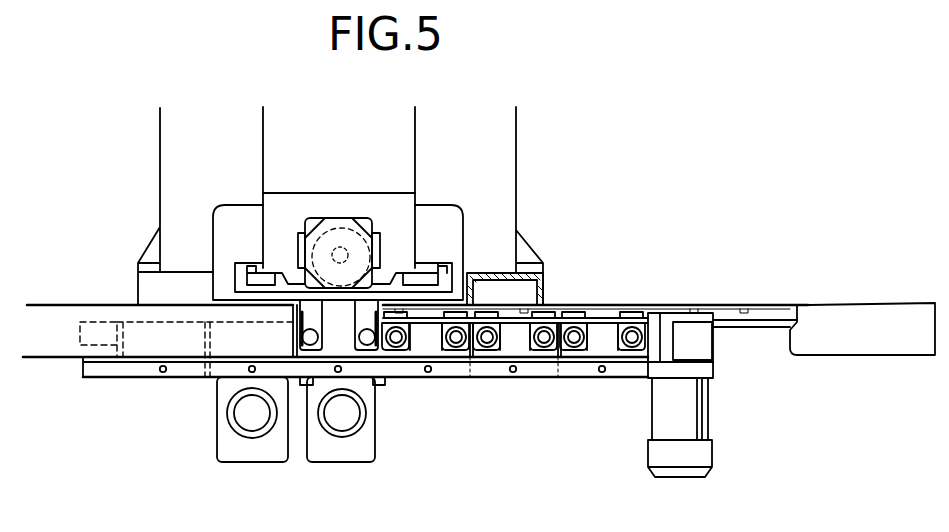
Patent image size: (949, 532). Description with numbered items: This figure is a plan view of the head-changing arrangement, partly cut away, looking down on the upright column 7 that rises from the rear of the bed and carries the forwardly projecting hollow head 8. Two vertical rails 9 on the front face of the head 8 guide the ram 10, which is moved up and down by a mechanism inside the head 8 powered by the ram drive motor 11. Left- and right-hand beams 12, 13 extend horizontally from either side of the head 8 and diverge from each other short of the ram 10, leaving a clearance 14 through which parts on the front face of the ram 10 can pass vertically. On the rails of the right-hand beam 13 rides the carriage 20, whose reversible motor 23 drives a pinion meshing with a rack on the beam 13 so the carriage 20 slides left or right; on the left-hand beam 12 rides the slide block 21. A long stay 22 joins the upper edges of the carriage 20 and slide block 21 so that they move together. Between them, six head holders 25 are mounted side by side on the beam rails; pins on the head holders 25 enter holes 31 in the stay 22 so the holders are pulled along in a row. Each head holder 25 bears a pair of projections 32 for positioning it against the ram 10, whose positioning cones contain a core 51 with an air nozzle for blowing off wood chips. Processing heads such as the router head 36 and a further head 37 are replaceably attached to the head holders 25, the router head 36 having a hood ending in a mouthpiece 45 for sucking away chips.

The upright column 7 is at (160, 162).
The hollow head 8 is at (417, 152).
The vertical rail 9 is at (257, 276).
The ram 10 is at (443, 290).
The ram drive motor 11 is at (350, 223).
The left-hand beam 12 is at (50, 305).
The right-hand beam 13 is at (743, 303).
The clearance 14 is at (312, 379).
The carriage 20 is at (717, 338).
The slide block 21 is at (83, 333).
The stay 22 is at (187, 370).
The reversible motor 23 is at (708, 417).
The head holder 25 is at (141, 347).
The hole 31 is at (600, 373).
The projection 32 is at (545, 315).
The router head 36 is at (258, 463).
The processing head 37 is at (353, 450).
The mouthpiece 45 is at (237, 435).
The core 51 is at (379, 345).